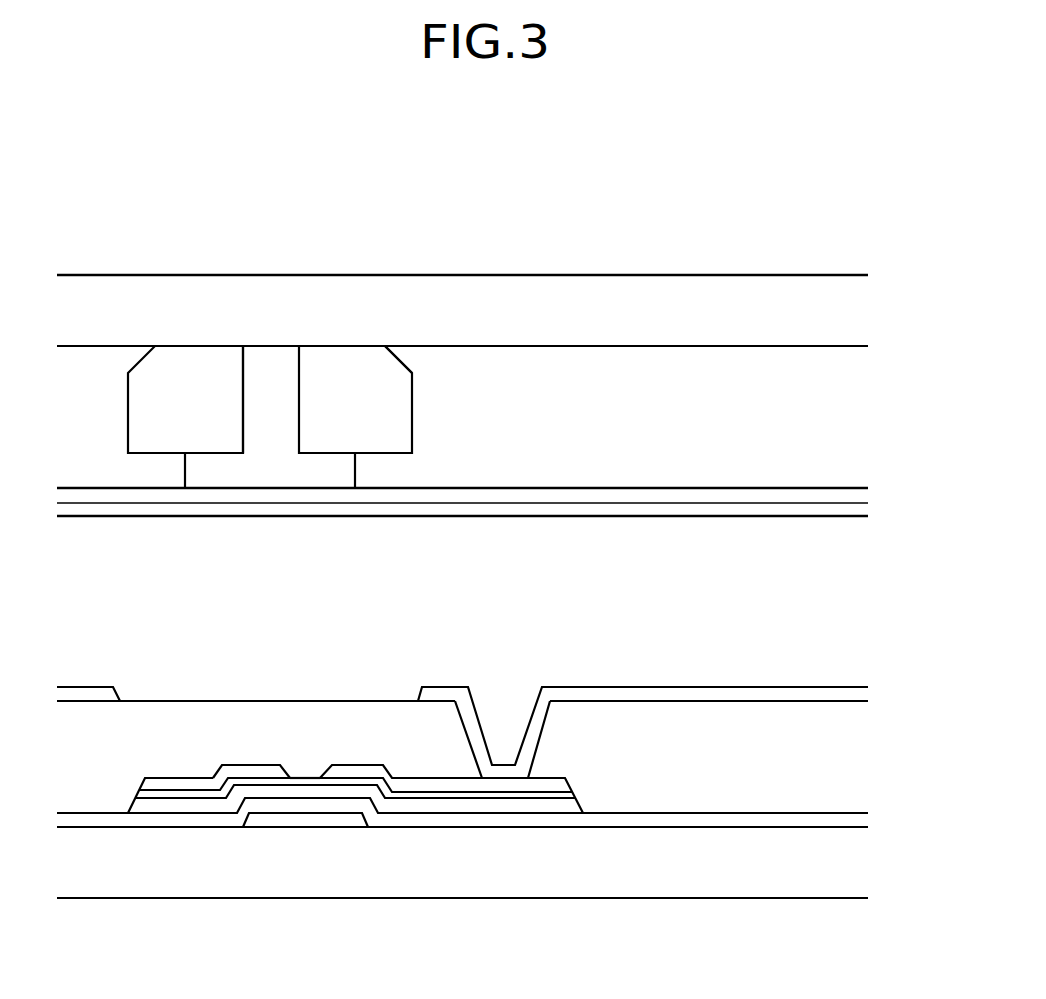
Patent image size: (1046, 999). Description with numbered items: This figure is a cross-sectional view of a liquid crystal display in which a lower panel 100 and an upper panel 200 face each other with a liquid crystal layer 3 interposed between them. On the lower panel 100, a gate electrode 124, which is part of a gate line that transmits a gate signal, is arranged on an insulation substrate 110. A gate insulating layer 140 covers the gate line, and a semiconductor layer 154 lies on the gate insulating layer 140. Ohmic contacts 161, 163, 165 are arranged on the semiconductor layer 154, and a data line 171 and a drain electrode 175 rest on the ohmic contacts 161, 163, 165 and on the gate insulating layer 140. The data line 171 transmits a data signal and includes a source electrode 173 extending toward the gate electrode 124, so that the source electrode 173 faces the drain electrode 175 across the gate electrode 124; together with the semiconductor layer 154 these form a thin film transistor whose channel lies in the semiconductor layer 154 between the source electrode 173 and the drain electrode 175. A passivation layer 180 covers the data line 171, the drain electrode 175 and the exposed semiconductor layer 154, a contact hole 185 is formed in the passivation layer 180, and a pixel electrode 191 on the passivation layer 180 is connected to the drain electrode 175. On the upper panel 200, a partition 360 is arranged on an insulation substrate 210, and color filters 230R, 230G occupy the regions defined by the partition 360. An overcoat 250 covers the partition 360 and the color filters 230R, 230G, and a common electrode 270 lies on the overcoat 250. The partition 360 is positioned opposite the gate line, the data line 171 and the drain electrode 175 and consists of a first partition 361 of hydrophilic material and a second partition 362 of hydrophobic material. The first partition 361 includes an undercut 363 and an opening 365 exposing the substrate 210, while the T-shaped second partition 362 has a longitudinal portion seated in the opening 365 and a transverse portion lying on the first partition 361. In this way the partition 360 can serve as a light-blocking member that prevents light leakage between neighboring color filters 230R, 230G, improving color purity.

The liquid crystal layer 3 is at (872, 521).
The lower panel 100 is at (872, 690).
The insulation substrate 110 is at (718, 877).
The gate electrode 124 is at (297, 820).
The gate insulating layer 140 is at (617, 820).
The semiconductor layer 154 is at (335, 793).
The ohmic contact 161 is at (183, 797).
The ohmic contact 163 is at (270, 778).
The ohmic contact 165 is at (442, 793).
The data line 171 is at (162, 788).
The source electrode 173 is at (258, 772).
The drain electrode 175 is at (360, 772).
The passivation layer 180 is at (720, 728).
The contact hole 185 is at (538, 740).
The pixel electrode 191 is at (85, 693).
The upper panel 200 is at (872, 275).
The insulation substrate 210 is at (505, 297).
The color filter 230R is at (110, 431).
The color filter 230G is at (612, 433).
The overcoat 250 is at (533, 495).
The common electrode 270 is at (447, 508).
The partition 360 is at (310, 199).
The first partition 361 is at (357, 375).
The second partition 362 is at (280, 382).
The undercut 363 is at (400, 358).
The opening 365 is at (245, 382).